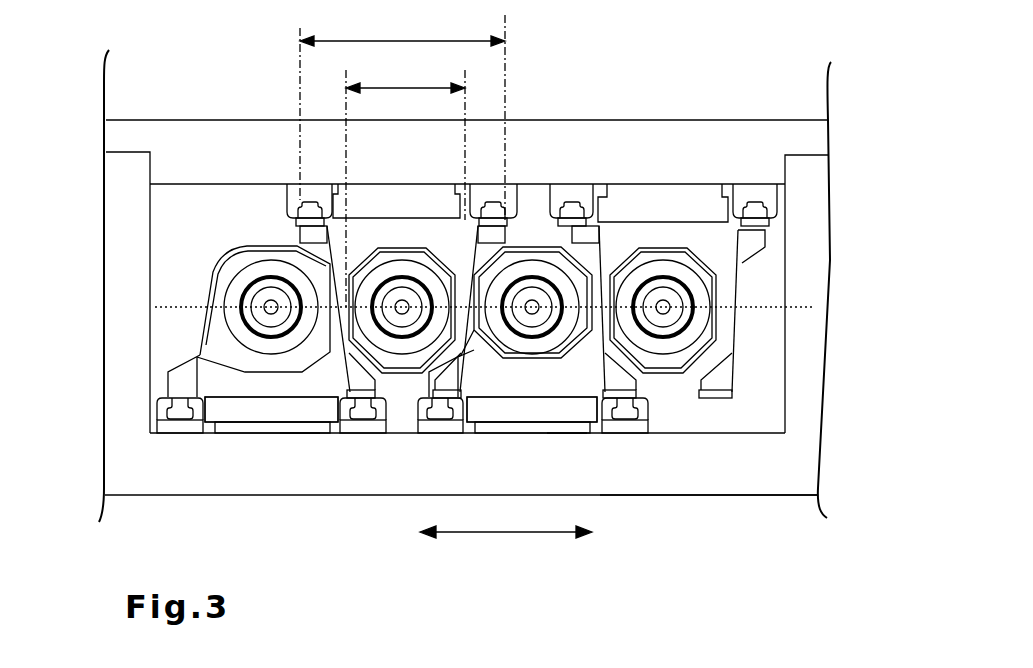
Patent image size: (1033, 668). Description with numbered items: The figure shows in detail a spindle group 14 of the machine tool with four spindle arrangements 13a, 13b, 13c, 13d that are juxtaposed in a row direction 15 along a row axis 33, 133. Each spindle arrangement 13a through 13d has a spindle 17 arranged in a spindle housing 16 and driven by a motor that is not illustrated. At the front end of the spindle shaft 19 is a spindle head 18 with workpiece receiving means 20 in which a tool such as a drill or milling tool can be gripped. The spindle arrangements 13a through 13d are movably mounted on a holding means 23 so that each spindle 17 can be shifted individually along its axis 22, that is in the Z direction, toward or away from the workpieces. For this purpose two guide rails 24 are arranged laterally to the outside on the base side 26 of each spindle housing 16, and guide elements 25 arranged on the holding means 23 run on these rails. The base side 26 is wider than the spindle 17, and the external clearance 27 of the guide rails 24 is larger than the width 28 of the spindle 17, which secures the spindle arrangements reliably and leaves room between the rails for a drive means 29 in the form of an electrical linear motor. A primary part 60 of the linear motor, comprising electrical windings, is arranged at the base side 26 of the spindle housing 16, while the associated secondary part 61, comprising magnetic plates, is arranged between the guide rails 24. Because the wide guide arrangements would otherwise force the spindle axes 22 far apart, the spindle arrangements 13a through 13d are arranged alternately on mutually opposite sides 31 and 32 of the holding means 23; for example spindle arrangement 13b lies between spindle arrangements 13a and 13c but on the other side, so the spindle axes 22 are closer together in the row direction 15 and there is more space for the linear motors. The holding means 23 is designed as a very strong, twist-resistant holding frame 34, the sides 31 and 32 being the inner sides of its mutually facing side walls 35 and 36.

The spindle arrangement 13a is at (185, 309).
The spindle arrangement 13b is at (393, 197).
The spindle arrangement 13c is at (536, 223).
The spindle arrangement 13d is at (687, 194).
The spindle group 14 is at (632, 97).
The row direction 15 is at (505, 537).
The spindle housing 16 is at (215, 385).
The spindle 17 is at (250, 309).
The spindle head 18 is at (377, 287).
The spindle shaft 19 is at (397, 310).
The workpiece receiving means 20 is at (446, 271).
The axis 22 is at (484, 327).
The holding means 23 is at (693, 497).
The guide rail 24 is at (178, 407).
The guide element 25 is at (303, 195).
The base side 26 is at (250, 400).
The external clearance 27 is at (367, 43).
The width 28 is at (393, 88).
The drive means 29 is at (304, 449).
The side 31 is at (705, 435).
The side 32 is at (172, 185).
The row axis 33 is at (788, 307).
The holding frame 34 is at (709, 520).
The side wall 35 is at (185, 497).
The side wall 36 is at (203, 135).
The primary part 60 is at (295, 412).
The secondary part 61 is at (265, 423).
The axis 133 is at (538, 271).